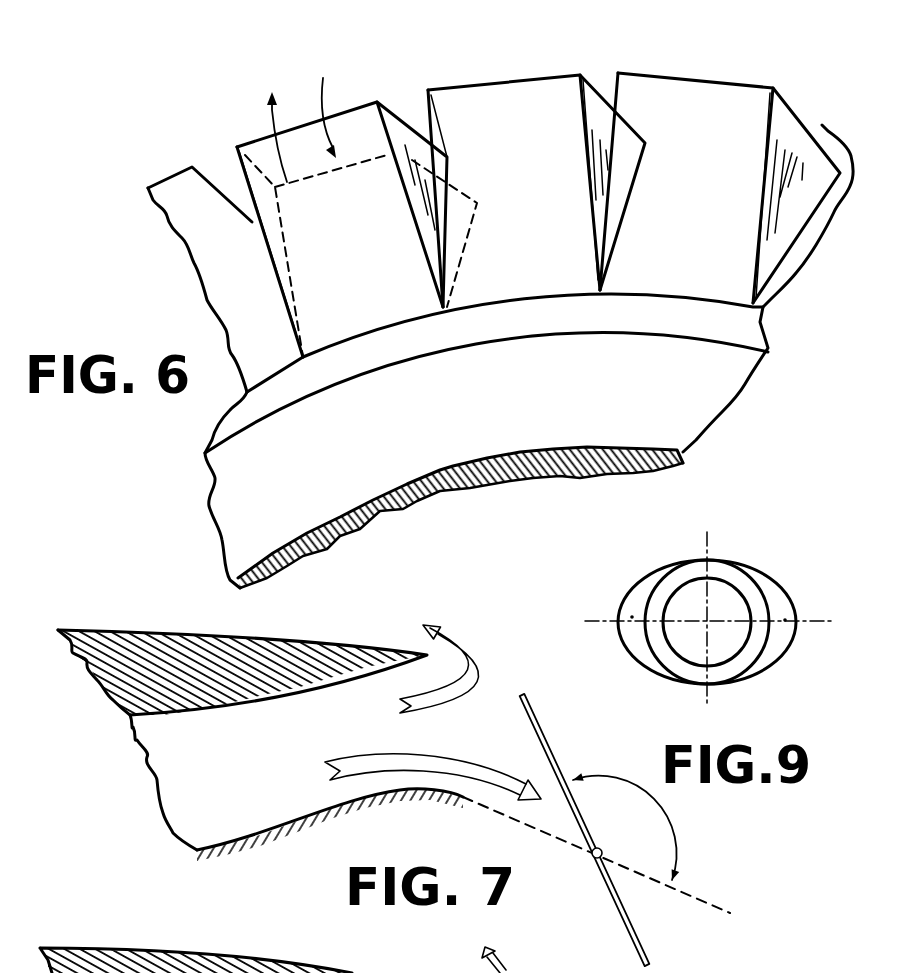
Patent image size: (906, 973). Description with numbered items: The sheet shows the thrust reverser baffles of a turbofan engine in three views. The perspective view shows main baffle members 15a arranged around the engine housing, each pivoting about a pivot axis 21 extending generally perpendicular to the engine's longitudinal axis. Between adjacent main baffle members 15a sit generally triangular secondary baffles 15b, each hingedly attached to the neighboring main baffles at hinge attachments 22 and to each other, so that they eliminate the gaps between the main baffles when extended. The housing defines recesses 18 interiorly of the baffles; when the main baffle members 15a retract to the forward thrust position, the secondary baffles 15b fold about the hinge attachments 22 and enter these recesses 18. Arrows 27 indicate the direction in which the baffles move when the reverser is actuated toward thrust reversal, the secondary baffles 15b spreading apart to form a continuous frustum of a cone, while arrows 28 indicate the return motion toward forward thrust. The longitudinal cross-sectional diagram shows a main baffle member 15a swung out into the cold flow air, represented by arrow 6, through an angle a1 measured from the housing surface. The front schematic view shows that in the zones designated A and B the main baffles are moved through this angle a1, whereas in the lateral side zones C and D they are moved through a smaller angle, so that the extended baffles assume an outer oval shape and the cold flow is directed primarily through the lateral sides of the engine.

In FIG. 7, the cold flow air arrow 6 is at (256, 740).
In FIG. 6, the main baffle member 15a is at (470, 106).
In FIG. 7, the main baffle member 15a is at (548, 748).
In FIG. 6, the secondary baffle 15b is at (617, 140).
In FIG. 6, the recess 18 is at (253, 480).
In FIG. 6, the pivot axis 21 is at (606, 300).
In FIG. 6, the hinge attachment 22 is at (585, 76).
In FIG. 6, the arrows (thrust reversal direction) 27 is at (270, 116).
In FIG. 6, the arrows (forward thrust direction) 28 is at (331, 99).
In FIG. 7, the displacement angle a1 is at (635, 826).
In FIG. 9, the housing zone A is at (704, 546).
In FIG. 9, the housing zone B is at (694, 708).
In FIG. 9, the lateral side zone C is at (632, 617).
In FIG. 9, the lateral side zone D is at (785, 620).